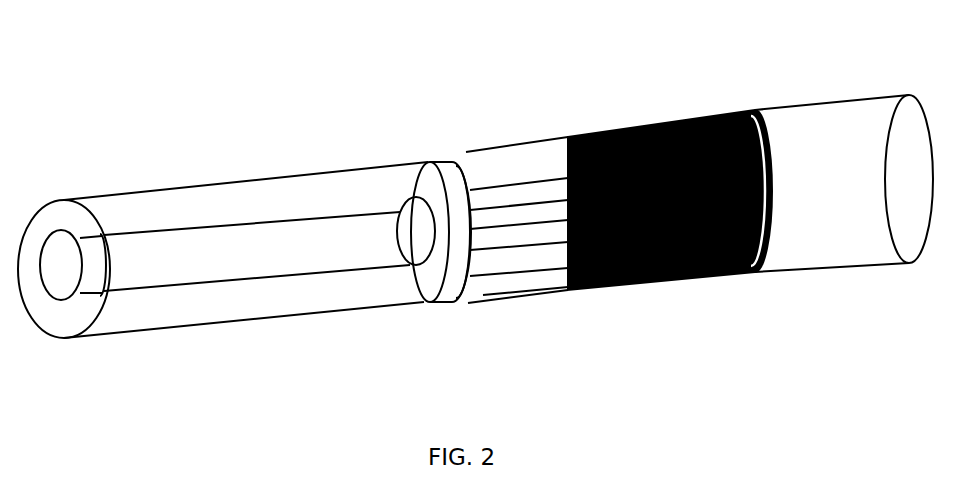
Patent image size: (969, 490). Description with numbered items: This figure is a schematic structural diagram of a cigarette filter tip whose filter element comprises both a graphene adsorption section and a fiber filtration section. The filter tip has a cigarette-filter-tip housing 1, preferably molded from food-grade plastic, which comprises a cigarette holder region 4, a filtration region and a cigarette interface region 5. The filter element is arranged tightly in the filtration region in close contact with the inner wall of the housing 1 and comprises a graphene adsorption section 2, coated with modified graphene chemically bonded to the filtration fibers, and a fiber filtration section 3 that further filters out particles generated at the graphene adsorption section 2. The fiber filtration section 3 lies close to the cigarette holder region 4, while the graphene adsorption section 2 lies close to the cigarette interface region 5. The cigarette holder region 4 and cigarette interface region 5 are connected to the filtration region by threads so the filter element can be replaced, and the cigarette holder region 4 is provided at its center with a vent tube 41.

The cigarette-filter-tip housing 1 is at (384, 168).
The graphene adsorption section 2 is at (612, 288).
The fiber filtration section 3 is at (498, 258).
The cigarette holder region 4 is at (182, 305).
The vent tube 41 is at (280, 235).
The cigarette interface region 5 is at (823, 130).